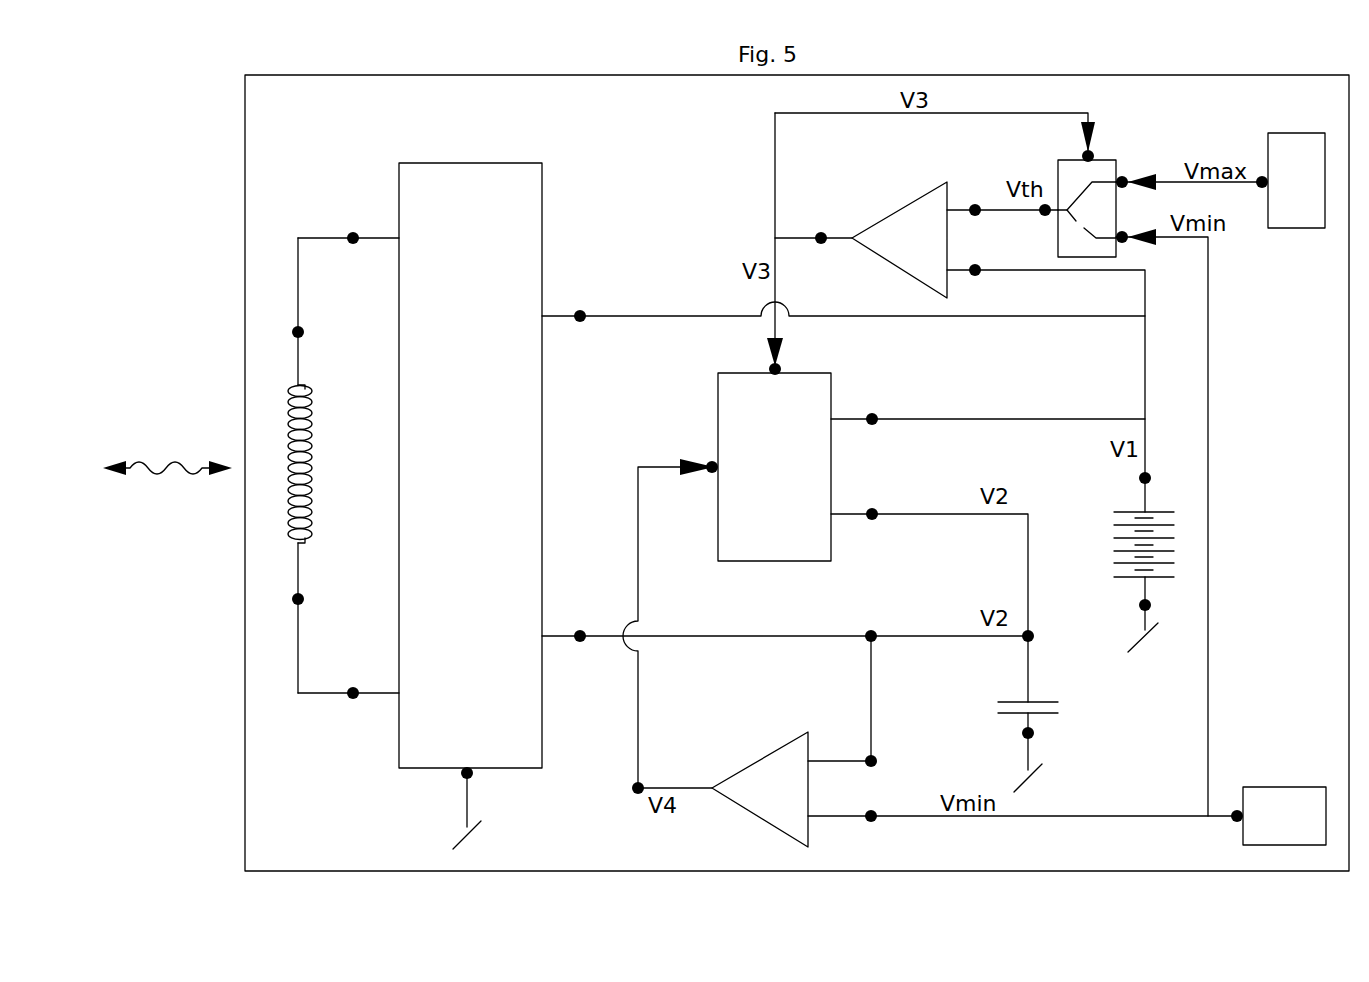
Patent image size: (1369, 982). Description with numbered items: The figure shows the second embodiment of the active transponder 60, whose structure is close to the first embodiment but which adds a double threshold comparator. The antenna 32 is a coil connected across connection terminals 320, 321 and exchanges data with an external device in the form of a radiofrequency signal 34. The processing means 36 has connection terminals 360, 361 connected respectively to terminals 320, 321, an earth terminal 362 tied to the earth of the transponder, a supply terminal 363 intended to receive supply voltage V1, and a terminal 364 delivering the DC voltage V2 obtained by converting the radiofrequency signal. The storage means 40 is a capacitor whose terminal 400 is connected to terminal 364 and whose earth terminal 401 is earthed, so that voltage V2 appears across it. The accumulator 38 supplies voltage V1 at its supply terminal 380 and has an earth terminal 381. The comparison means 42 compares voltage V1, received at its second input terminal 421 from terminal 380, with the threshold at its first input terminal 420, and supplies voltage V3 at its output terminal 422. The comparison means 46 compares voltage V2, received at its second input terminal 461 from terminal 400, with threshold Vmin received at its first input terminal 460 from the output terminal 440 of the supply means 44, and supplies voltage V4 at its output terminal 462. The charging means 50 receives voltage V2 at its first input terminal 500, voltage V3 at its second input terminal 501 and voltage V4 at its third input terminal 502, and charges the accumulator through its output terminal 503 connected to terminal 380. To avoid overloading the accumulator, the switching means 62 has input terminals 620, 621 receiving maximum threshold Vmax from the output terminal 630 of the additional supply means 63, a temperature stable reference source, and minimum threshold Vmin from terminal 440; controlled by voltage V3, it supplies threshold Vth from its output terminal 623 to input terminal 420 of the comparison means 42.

The antenna 32 is at (318, 464).
The radiofrequency signal 34 is at (167, 455).
The processing means 36 is at (523, 437).
The accumulator 38 is at (1098, 526).
The storage means 40 is at (1074, 704).
The comparison means 42 is at (898, 226).
The supply means 44 is at (1282, 787).
The comparison means 46 is at (769, 776).
The charging means 50 is at (733, 518).
The active transponder 60 is at (222, 258).
The switching means 62 is at (1104, 172).
The additional supply means 63 is at (1290, 152).
The connection terminal 320 is at (321, 311).
The connection terminal 321 is at (321, 618).
The connection terminal 360 is at (348, 225).
The connection terminal 361 is at (348, 680).
The earth terminal 362 is at (486, 808).
The supply terminal 363 is at (843, 303).
The terminal 364 is at (785, 622).
The supply terminal 380 is at (1168, 479).
The earth terminal 381 is at (1162, 614).
The terminal 400 is at (1050, 637).
The earth terminal 401 is at (1046, 752).
The first input terminal 420 is at (1002, 196).
The second input terminal 421 is at (1046, 376).
The output terminal 422 is at (813, 225).
The output terminal 440 is at (1218, 828).
The first input terminal 460 is at (1022, 801).
The second input terminal 461 is at (866, 706).
The output terminal 462 is at (672, 776).
The first input terminal 500 is at (929, 593).
The second input terminal 501 is at (798, 359).
The third input terminal 502 is at (670, 612).
The output terminal 503 is at (988, 406).
The input terminal 620 is at (1189, 170).
The input terminal 621 is at (1162, 511).
The output terminal 623 is at (1027, 223).
The output terminal 630 is at (1244, 196).